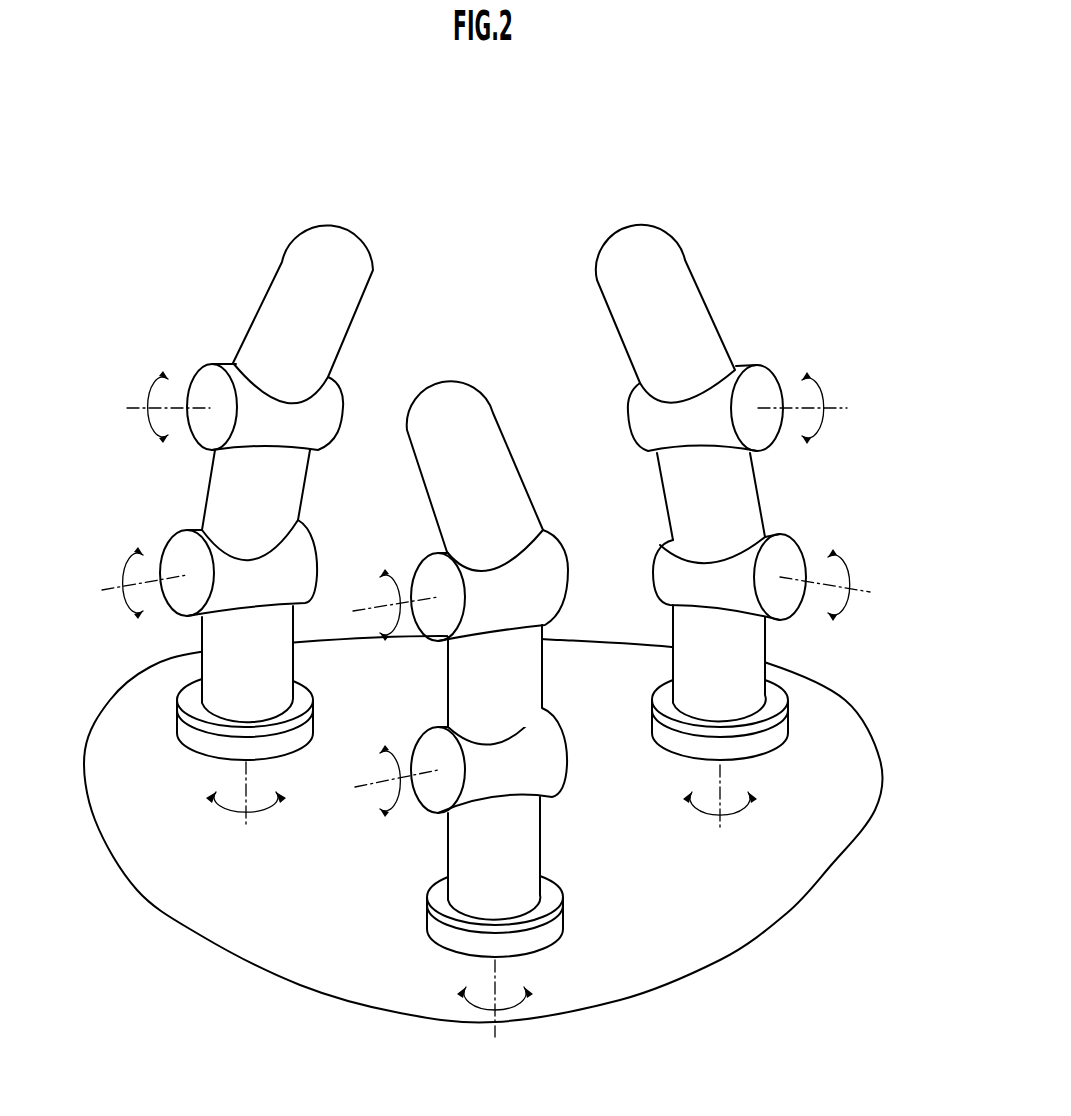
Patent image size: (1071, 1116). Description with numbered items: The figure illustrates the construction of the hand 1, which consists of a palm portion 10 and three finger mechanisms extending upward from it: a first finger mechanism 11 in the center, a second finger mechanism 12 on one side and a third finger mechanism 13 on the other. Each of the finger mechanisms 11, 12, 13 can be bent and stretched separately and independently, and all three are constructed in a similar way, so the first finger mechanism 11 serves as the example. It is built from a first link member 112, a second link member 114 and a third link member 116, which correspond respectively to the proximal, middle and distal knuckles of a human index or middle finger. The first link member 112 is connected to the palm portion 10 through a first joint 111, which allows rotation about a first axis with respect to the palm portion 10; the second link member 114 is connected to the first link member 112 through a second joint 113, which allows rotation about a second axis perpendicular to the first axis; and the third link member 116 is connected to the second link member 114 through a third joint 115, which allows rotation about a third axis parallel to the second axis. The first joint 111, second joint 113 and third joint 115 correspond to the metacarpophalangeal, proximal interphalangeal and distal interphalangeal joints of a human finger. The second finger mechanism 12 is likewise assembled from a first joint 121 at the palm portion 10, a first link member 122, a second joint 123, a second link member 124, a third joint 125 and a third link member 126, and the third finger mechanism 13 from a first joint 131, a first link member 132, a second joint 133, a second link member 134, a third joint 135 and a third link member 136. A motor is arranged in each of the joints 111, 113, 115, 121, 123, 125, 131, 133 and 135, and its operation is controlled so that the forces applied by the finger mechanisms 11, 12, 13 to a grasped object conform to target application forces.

The hand 1 is at (487, 167).
The palm portion 10 is at (760, 915).
The first finger mechanism 11 is at (483, 370).
The second finger mechanism 12 is at (683, 218).
The third finger mechanism 13 is at (282, 217).
The first joint 111 is at (567, 878).
The first link member 112 is at (528, 828).
The second joint 113 is at (548, 702).
The second link member 114 is at (533, 647).
The third joint 115 is at (548, 530).
The third link member 116 is at (490, 465).
The first joint 121 is at (795, 697).
The first link member 122 is at (750, 647).
The second joint 123 is at (817, 550).
The second link member 124 is at (742, 500).
The third joint 125 is at (790, 372).
The third link member 126 is at (698, 320).
The first joint 131 is at (170, 697).
The first link member 132 is at (217, 645).
The second joint 133 is at (152, 545).
The second link member 134 is at (224, 497).
The third joint 135 is at (178, 367).
The third link member 136 is at (272, 318).